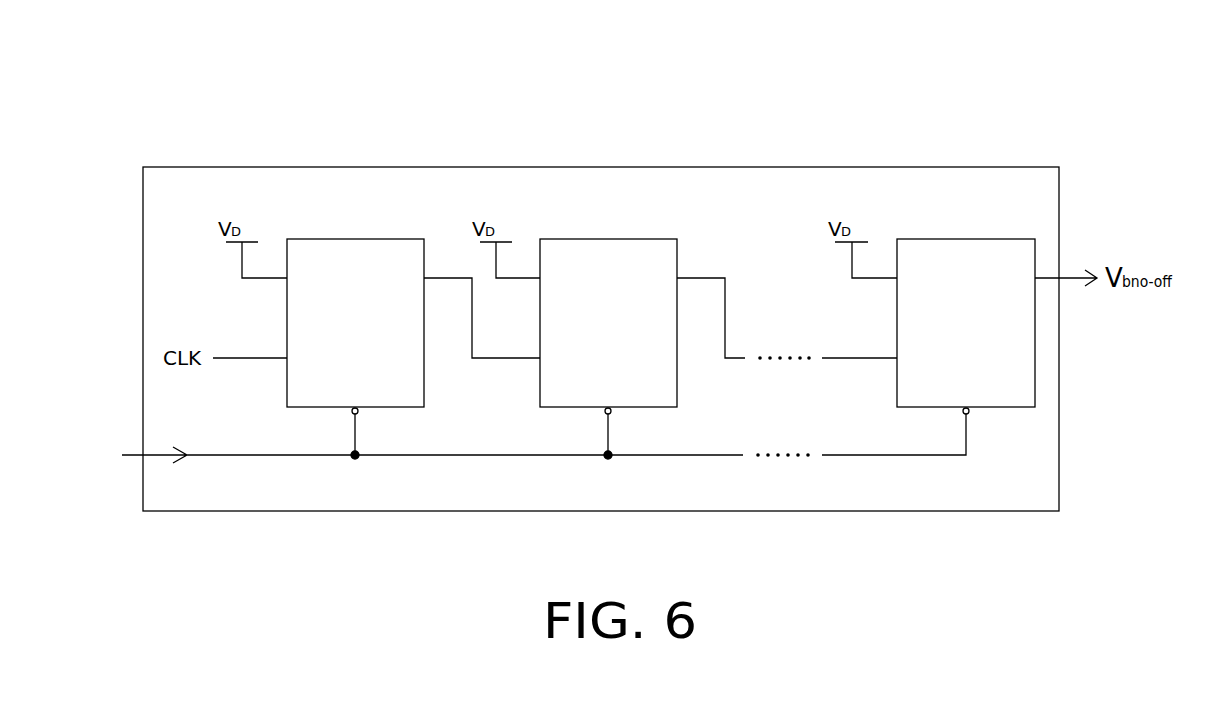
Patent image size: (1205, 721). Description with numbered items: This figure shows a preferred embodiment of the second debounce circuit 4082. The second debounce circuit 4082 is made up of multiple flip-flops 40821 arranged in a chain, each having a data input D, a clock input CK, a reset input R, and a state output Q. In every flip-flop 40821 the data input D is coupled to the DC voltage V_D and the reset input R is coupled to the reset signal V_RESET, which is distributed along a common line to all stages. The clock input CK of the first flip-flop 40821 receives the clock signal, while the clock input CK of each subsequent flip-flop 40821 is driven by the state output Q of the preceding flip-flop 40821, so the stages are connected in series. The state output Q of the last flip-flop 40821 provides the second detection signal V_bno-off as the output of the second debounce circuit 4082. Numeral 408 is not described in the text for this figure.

The second debounce circuit 4082 is at (717, 167).
The flip-flop 40821 is at (347, 239).
The reset signal line (VRESET) 408 is at (514, 439).